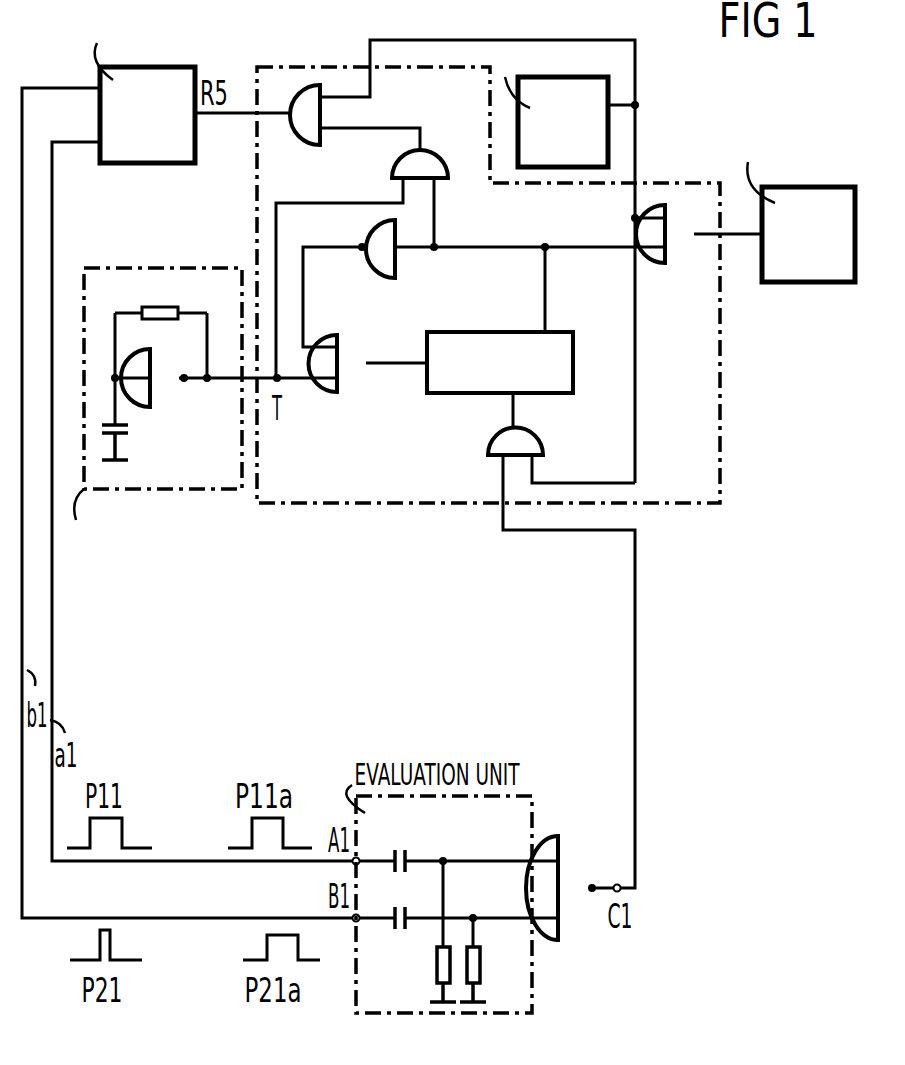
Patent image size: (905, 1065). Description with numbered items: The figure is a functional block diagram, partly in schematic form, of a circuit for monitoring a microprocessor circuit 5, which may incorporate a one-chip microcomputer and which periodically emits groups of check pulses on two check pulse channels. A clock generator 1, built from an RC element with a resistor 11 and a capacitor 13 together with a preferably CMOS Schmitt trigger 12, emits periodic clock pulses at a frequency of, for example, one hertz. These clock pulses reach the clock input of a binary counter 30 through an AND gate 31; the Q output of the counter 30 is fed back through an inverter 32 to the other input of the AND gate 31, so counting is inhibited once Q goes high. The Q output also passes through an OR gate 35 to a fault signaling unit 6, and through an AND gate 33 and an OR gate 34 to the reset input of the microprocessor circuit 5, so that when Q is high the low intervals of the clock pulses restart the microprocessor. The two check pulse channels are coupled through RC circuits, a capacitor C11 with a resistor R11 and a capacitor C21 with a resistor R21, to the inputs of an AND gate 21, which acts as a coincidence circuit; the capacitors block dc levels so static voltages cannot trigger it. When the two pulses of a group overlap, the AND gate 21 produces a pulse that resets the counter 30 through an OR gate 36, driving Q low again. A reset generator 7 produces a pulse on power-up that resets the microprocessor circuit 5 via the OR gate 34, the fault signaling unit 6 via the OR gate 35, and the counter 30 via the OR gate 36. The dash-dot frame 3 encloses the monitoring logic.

The clock generator 1 is at (118, 283).
The monitoring circuit 3 is at (709, 470).
The microprocessor circuit 5 is at (161, 81).
The fault signaling unit 6 is at (790, 200).
The reset generator 7 is at (562, 104).
The resistor 11 is at (172, 293).
The Schmitt trigger 12 is at (164, 390).
The capacitor 13 is at (130, 437).
The AND gate 21 is at (556, 866).
The binary counter 30 is at (485, 341).
The AND gate 31 is at (348, 379).
The inverter 32 is at (363, 257).
The AND gate 33 is at (426, 144).
The OR gate 34 is at (294, 131).
The OR gate 35 is at (664, 258).
The OR gate 36 is at (533, 442).
The capacitor C11 is at (398, 841).
The capacitor C21 is at (416, 902).
The resistor R11 is at (426, 974).
The resistor R21 is at (491, 974).